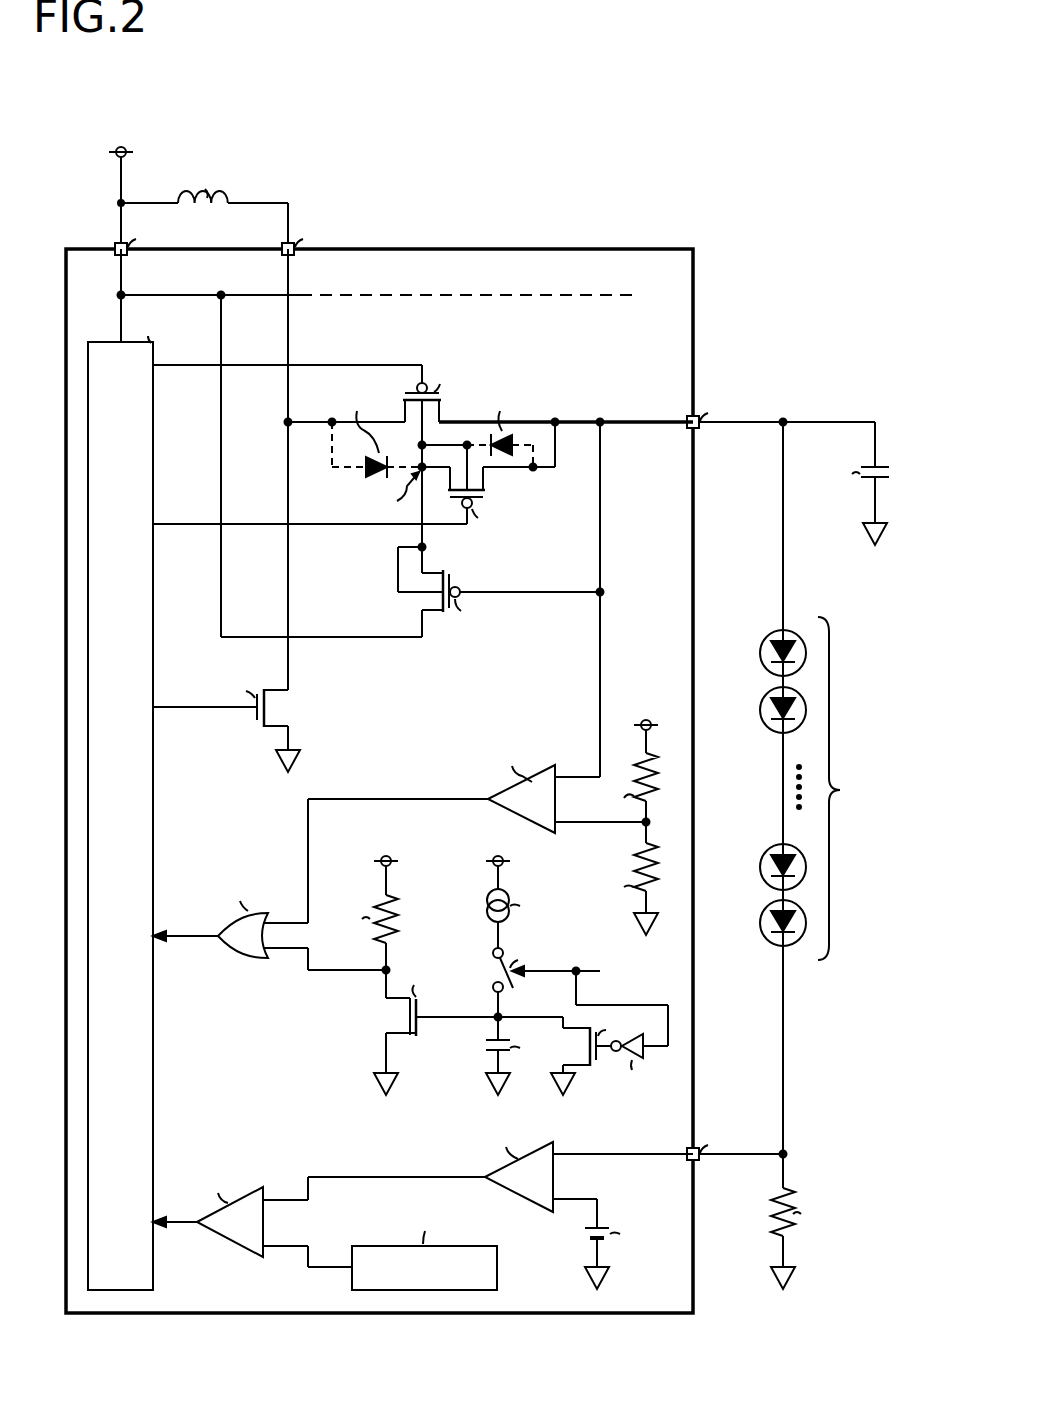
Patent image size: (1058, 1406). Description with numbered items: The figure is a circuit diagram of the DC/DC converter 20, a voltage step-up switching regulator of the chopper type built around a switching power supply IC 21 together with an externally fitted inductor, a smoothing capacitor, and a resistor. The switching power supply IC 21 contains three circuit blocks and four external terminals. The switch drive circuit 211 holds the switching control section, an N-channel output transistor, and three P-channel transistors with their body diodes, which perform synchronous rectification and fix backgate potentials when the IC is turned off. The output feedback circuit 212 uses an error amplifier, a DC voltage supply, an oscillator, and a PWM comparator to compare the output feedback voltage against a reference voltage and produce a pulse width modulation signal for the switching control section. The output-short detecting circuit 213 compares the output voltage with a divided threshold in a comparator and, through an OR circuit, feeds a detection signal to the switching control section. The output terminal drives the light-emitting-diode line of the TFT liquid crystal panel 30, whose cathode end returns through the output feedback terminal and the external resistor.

The DC/DC converter 20 is at (477, 706).
The switching power supply IC 21 is at (402, 762).
The switch drive circuit 211 is at (620, 377).
The output feedback circuit 212 is at (558, 1280).
The output-short detecting circuit 213 is at (437, 765).
The TFT liquid crystal panel 30 is at (878, 631).